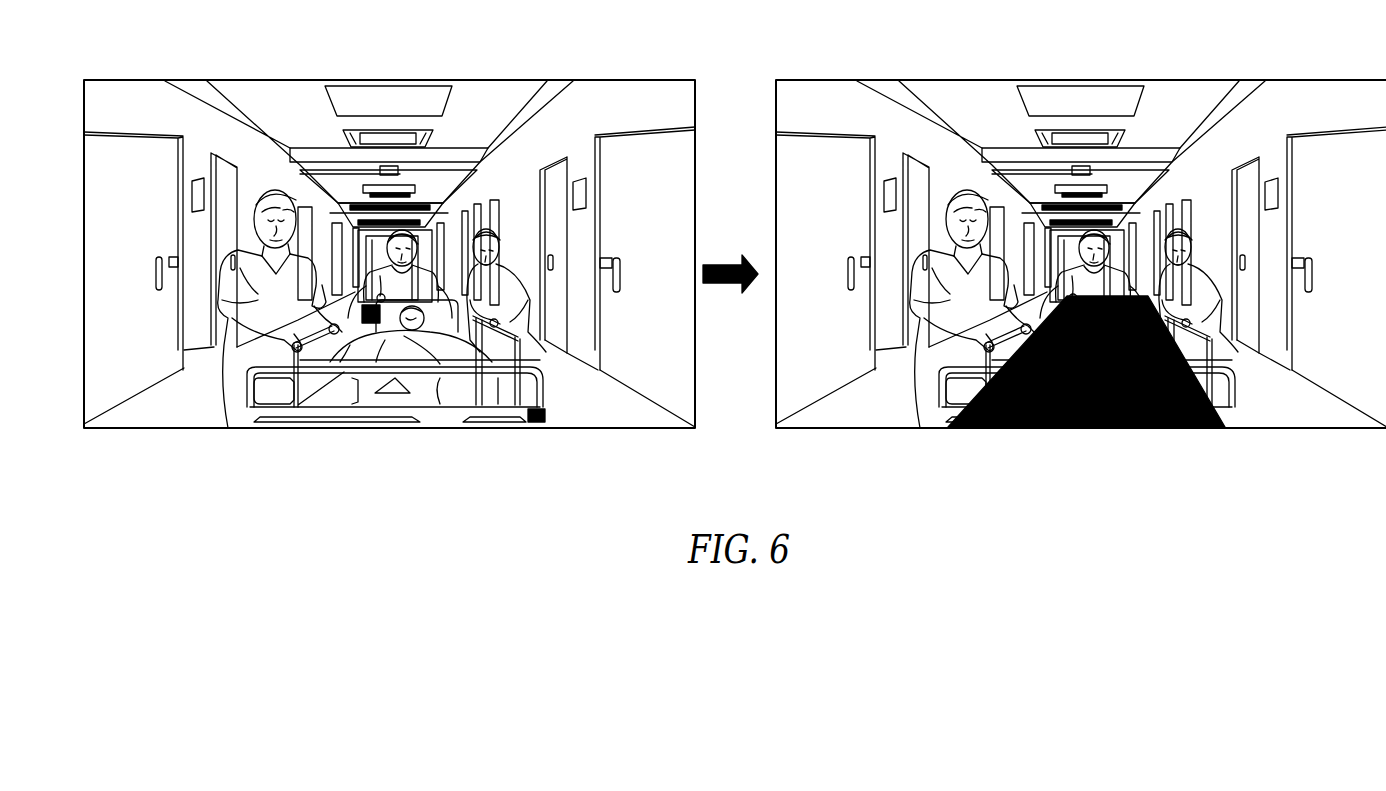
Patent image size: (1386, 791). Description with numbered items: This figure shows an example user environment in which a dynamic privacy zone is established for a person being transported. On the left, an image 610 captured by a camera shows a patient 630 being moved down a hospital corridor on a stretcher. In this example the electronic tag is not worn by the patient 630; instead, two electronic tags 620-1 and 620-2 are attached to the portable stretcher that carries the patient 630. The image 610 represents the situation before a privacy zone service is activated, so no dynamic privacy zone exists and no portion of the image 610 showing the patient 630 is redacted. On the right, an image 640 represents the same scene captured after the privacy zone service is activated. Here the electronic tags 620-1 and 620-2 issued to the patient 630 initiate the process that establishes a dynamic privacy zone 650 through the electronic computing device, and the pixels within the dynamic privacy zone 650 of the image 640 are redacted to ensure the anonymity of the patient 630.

The image 610 is at (627, 135).
The electronic tag 620-1 is at (371, 325).
The electronic tag 620-2 is at (542, 424).
The patient 630 is at (417, 337).
The image 640 is at (1318, 135).
The dynamic privacy zone 650 is at (1081, 430).